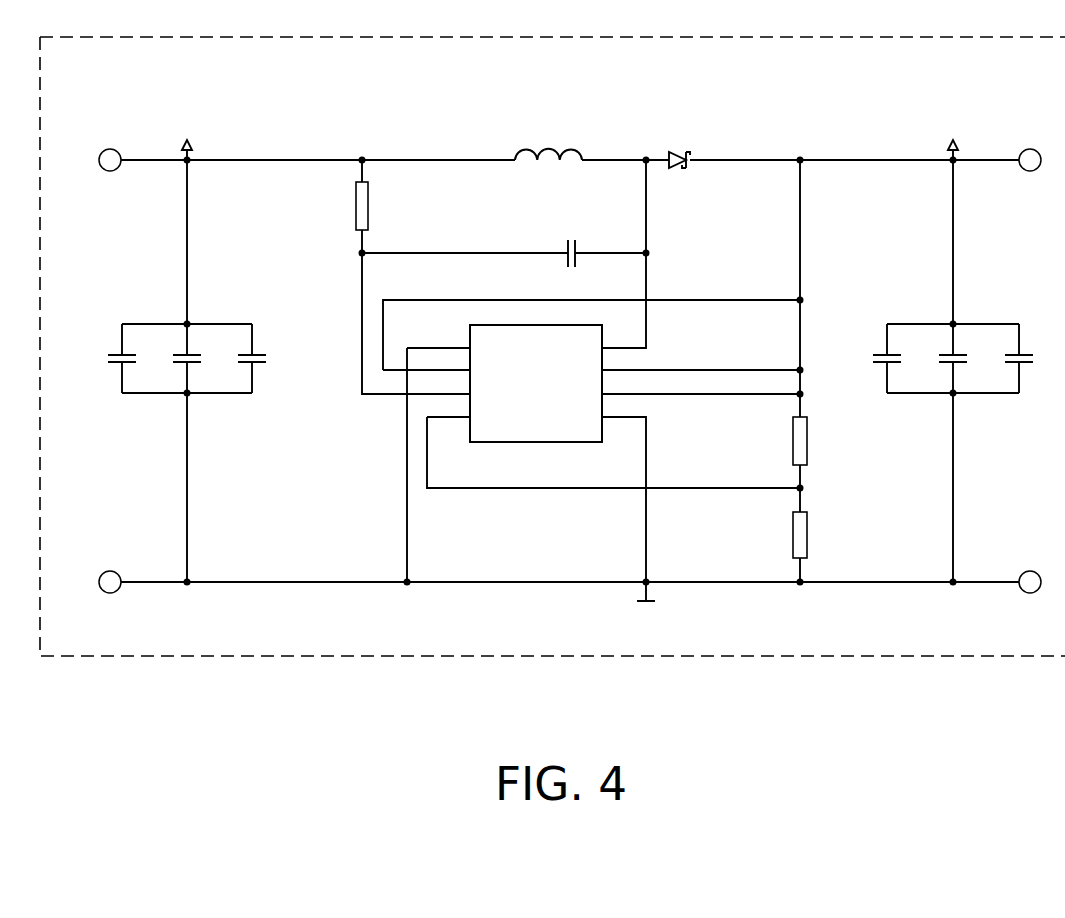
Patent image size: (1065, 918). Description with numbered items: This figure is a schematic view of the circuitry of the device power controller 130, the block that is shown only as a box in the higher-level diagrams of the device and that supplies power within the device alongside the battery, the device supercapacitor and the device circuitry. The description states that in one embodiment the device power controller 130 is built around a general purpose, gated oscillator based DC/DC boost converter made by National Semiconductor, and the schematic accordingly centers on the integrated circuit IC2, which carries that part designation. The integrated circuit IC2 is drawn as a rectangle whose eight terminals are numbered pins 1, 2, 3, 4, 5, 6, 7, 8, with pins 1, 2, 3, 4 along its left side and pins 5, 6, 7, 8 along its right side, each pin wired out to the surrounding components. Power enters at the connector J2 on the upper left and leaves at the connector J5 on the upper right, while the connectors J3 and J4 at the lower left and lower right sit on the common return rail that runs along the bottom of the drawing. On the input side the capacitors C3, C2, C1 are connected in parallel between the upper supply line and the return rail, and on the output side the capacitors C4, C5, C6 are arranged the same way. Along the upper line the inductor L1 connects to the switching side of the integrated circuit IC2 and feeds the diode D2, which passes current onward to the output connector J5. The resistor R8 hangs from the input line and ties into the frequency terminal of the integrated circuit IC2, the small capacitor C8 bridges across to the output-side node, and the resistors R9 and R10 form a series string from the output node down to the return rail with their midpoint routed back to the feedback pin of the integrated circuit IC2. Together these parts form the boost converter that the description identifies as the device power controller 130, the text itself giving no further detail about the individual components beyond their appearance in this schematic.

The device power controller 130 is at (560, 99).
The +cap input connector J2 is at (109, 149).
The ground connector J3 is at (111, 584).
The ground connector J4 is at (1029, 584).
The +out connector J5 is at (1031, 160).
The capacitor 47u/10V C1 is at (242, 392).
The capacitor 47u/10V C2 is at (180, 408).
The capacitor 47u/10V C3 is at (119, 392).
The capacitor 47u/10V C4 is at (888, 392).
The capacitor 47u/10V C5 is at (950, 408).
The capacitor 47u/10V C6 is at (1011, 392).
The capacitor 10pF C8 is at (573, 254).
The resistor 75k R8 is at (376, 206).
The resistor 140k R9 is at (818, 441).
The resistor 100k R10 is at (818, 535).
The inductor 4u7 L1 is at (538, 160).
The diode MBRS140T3 D2 is at (712, 159).
The LM2623a regulator IC IC2 is at (536, 363).
The IC pin 1 PGND 1 is at (455, 338).
The IC pin 2 EN 2 is at (455, 361).
The IC pin 3 freq 3 is at (455, 385).
The IC pin 4 FB 4 is at (455, 408).
The IC pin 5 SGND 5 is at (617, 408).
The IC pin 6 VDD 6 is at (617, 385).
The IC pin 7 BOOT 7 is at (617, 361).
The IC pin 8 SW 8 is at (617, 338).